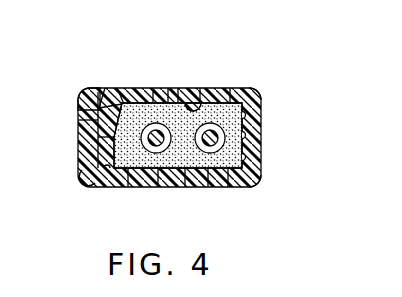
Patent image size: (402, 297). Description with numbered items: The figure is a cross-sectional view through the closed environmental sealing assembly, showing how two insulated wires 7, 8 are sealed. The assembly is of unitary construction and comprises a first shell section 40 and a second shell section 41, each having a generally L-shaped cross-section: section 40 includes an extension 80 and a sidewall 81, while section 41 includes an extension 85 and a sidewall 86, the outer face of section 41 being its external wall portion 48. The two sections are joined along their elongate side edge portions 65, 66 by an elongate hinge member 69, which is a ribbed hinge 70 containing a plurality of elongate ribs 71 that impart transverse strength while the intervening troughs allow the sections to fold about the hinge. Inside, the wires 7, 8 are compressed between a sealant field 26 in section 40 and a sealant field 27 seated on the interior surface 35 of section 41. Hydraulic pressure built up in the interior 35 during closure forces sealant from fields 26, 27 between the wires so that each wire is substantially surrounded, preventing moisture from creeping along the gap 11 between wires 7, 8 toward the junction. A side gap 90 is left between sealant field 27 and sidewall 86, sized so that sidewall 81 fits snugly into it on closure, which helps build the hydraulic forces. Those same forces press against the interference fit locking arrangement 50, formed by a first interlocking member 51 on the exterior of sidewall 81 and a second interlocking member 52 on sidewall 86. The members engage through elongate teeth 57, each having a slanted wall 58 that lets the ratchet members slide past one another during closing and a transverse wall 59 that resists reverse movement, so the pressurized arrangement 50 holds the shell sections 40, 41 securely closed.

The interference fit locking arrangement 50 is at (80, 78).
The slanted wall 58 is at (95, 110).
The transverse wall 59 is at (93, 113).
The second interlocking member 52 is at (100, 118).
The sidewall 86 is at (78, 127).
The external wall portion 48 is at (97, 144).
The first interlocking member 51 is at (100, 147).
The elongate tooth 57 is at (82, 166).
The second shell section 41 is at (88, 186).
The side gap 90 is at (97, 182).
The interior surface 35 is at (128, 186).
The gap 11 is at (158, 187).
The extension 85 is at (185, 187).
The insulated wire 8 is at (208, 187).
The sealant field 27 is at (228, 187).
The elongate side edge portion 66 is at (250, 184).
The ribbed hinge 70 is at (261, 167).
The elongate rib 71 is at (243, 133).
The elongate hinge member 69 is at (257, 116).
The elongate side edge portion 65 is at (247, 88).
The sealant field 26 is at (230, 88).
The extension 80 is at (188, 88).
The first shell section 40 is at (167, 88).
The insulated wire 7 is at (153, 88).
The sidewall 81 is at (125, 103).